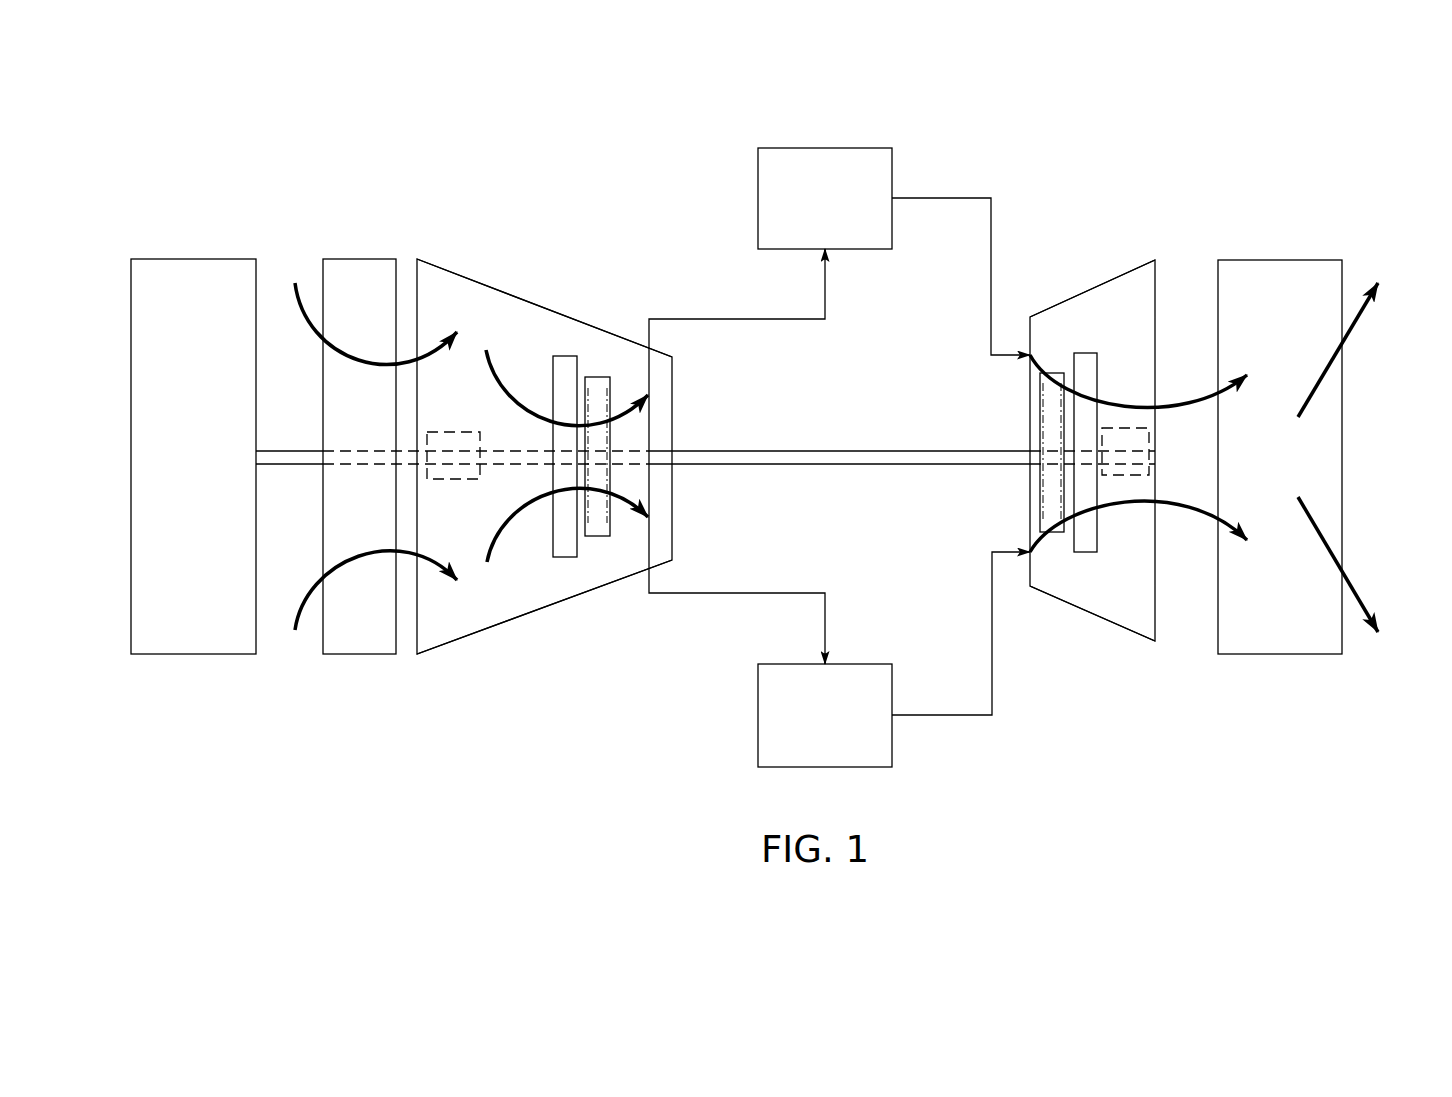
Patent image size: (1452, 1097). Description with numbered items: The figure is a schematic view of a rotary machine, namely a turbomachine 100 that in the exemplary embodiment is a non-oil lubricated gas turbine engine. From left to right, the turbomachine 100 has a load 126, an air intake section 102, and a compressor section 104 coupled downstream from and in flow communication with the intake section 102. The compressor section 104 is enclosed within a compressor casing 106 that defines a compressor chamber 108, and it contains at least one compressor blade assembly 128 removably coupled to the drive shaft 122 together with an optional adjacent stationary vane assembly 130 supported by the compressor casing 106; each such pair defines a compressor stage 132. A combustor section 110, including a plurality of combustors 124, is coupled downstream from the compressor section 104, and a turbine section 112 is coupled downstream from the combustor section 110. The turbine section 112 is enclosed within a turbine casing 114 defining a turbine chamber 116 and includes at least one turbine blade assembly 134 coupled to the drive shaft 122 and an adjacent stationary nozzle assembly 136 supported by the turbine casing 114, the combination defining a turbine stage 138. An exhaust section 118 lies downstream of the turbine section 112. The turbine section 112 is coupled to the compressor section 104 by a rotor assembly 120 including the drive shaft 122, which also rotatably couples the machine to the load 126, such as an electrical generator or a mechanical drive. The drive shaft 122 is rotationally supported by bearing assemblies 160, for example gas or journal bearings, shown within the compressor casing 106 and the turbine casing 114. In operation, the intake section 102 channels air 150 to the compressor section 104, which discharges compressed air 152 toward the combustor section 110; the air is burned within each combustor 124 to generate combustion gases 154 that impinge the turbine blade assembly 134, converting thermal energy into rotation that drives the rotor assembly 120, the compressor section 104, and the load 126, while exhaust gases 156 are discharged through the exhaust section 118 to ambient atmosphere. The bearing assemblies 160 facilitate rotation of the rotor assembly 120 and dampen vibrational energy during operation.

The turbomachine 100 is at (298, 72).
The air intake section 102 is at (357, 242).
The compressor section 104 is at (468, 260).
The compressor casing 106 is at (532, 302).
The compressor chamber 108 is at (590, 371).
The combustor section 110 is at (956, 137).
The turbine section 112 is at (1158, 237).
The turbine casing 114 is at (1090, 288).
The turbine chamber 116 is at (1090, 338).
The exhaust section 118 is at (1275, 260).
The rotor assembly 120 is at (850, 440).
The drive shaft 122 is at (915, 466).
The combustor 124 is at (803, 209).
The load 126 is at (193, 259).
The compressor blade assembly 128 is at (595, 536).
The stationary vane assembly 130 is at (565, 557).
The compressor stage 132 is at (587, 656).
The turbine blade assembly 134 is at (1057, 532).
The stationary nozzle assembly 136 is at (1085, 552).
The turbine stage 138 is at (1079, 667).
The air 150 is at (308, 325).
The compressed air 152 is at (507, 383).
The combustion gases 154 is at (1182, 397).
The exhaust gases 156 is at (1352, 332).
The bearing assembly 160 is at (458, 479).